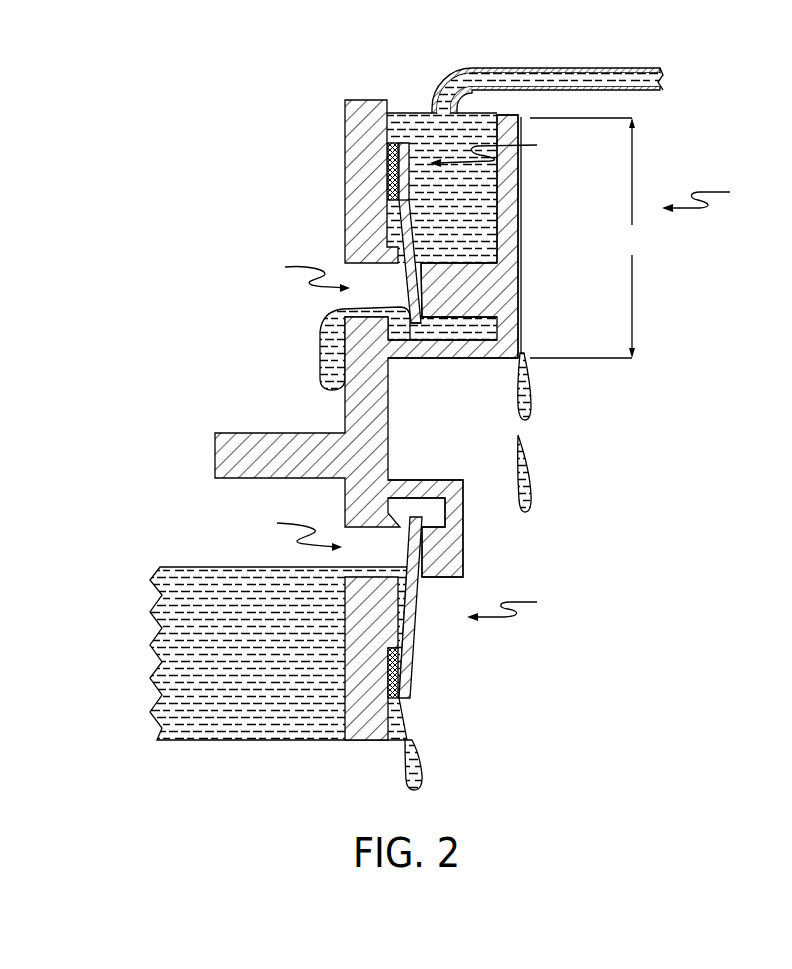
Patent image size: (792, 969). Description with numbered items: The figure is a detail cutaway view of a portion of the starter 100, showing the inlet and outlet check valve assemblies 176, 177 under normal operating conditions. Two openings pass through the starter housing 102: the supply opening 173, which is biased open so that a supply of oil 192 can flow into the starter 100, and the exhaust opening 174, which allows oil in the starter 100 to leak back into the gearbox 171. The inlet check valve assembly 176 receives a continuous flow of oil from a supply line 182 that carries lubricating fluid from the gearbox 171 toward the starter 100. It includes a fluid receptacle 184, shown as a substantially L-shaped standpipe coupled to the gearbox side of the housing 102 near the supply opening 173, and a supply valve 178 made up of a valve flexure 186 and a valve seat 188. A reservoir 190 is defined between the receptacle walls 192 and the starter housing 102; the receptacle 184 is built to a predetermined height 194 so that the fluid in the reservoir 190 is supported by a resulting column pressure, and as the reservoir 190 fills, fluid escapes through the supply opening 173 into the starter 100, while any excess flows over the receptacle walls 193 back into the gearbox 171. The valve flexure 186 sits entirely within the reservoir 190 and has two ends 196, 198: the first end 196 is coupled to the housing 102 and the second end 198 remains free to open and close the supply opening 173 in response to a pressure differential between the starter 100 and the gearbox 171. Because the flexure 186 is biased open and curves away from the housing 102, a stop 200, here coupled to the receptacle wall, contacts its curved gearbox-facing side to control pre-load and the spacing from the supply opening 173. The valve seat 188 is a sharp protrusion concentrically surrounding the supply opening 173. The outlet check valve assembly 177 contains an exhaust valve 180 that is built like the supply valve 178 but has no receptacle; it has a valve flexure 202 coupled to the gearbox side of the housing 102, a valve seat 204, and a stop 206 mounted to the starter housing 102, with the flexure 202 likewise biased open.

The starter 100 is at (135, 386).
The starter housing 102 is at (347, 177).
The gearbox 171 is at (698, 401).
The supply opening 173 is at (296, 272).
The exhaust opening 174 is at (287, 531).
The inlet check valve assembly 176 is at (718, 197).
The outlet check valve assembly 177 is at (525, 606).
The supply valve 178 is at (506, 150).
The exhaust valve 180 is at (424, 676).
The supply line 182 is at (582, 73).
The fluid receptacle 184 is at (508, 347).
The valve flexure 186 is at (413, 223).
The valve seat 188 is at (398, 253).
The reservoir 190 is at (413, 337).
The oil 192 is at (422, 117).
The receptacle walls 193 is at (513, 209).
The predetermined height 194 is at (592, 238).
The first end 196 is at (393, 153).
The second end 198 is at (417, 322).
The stop 200 is at (493, 280).
The exhaust valve flexure 202 is at (407, 628).
The valve seat 204 is at (387, 517).
The stop 206 is at (462, 562).